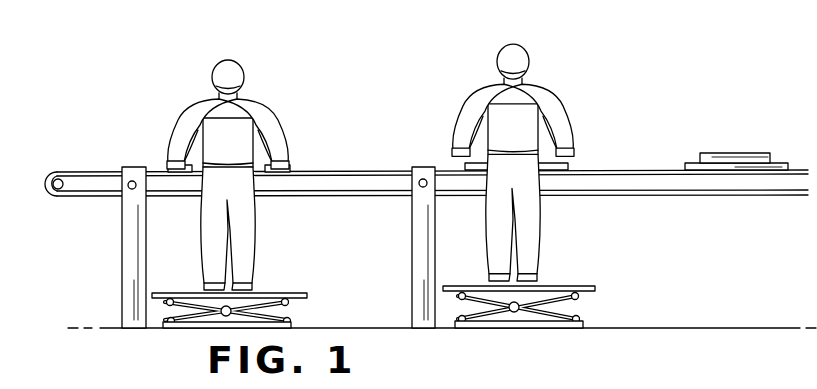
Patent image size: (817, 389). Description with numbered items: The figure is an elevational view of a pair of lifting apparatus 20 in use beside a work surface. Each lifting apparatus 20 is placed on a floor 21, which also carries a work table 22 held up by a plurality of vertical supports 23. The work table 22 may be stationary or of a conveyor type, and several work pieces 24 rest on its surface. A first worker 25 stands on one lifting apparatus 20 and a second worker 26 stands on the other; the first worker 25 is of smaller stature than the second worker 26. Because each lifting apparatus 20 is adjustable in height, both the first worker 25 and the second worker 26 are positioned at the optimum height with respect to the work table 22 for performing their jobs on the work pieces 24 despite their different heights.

The lifting apparatus 20 is at (307, 307).
The floor 21 is at (692, 328).
The work table 22 is at (362, 172).
The vertical supports 23 is at (122, 242).
The work pieces 24 is at (258, 155).
The first worker 25 is at (218, 126).
The second worker 26 is at (507, 125).